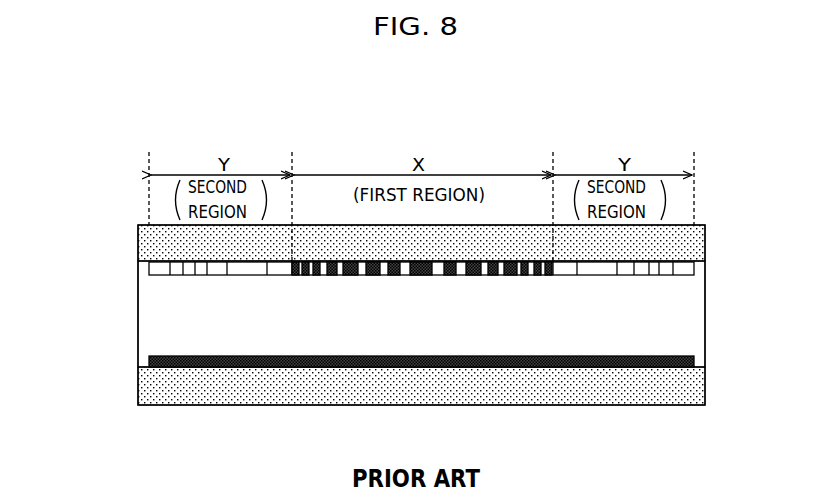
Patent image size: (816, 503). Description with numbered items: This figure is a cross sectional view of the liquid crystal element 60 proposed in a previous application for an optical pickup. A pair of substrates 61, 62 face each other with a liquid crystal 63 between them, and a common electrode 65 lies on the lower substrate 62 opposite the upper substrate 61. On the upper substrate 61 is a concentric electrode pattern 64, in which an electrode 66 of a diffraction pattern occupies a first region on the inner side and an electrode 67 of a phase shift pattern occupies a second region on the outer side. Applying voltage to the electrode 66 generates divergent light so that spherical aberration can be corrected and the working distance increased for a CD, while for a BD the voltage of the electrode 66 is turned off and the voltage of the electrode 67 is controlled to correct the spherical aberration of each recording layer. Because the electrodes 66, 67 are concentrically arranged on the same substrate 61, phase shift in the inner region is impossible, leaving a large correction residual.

The liquid crystal element 60 is at (95, 292).
The substrate 61 is at (697, 240).
The substrate 62 is at (695, 397).
The liquid crystal 63 is at (697, 323).
The concentric electrode pattern 64 is at (695, 267).
The common electrode 65 is at (693, 360).
The electrode of diffraction pattern 66 is at (392, 276).
The electrode of phase shift pattern 67 is at (217, 276).